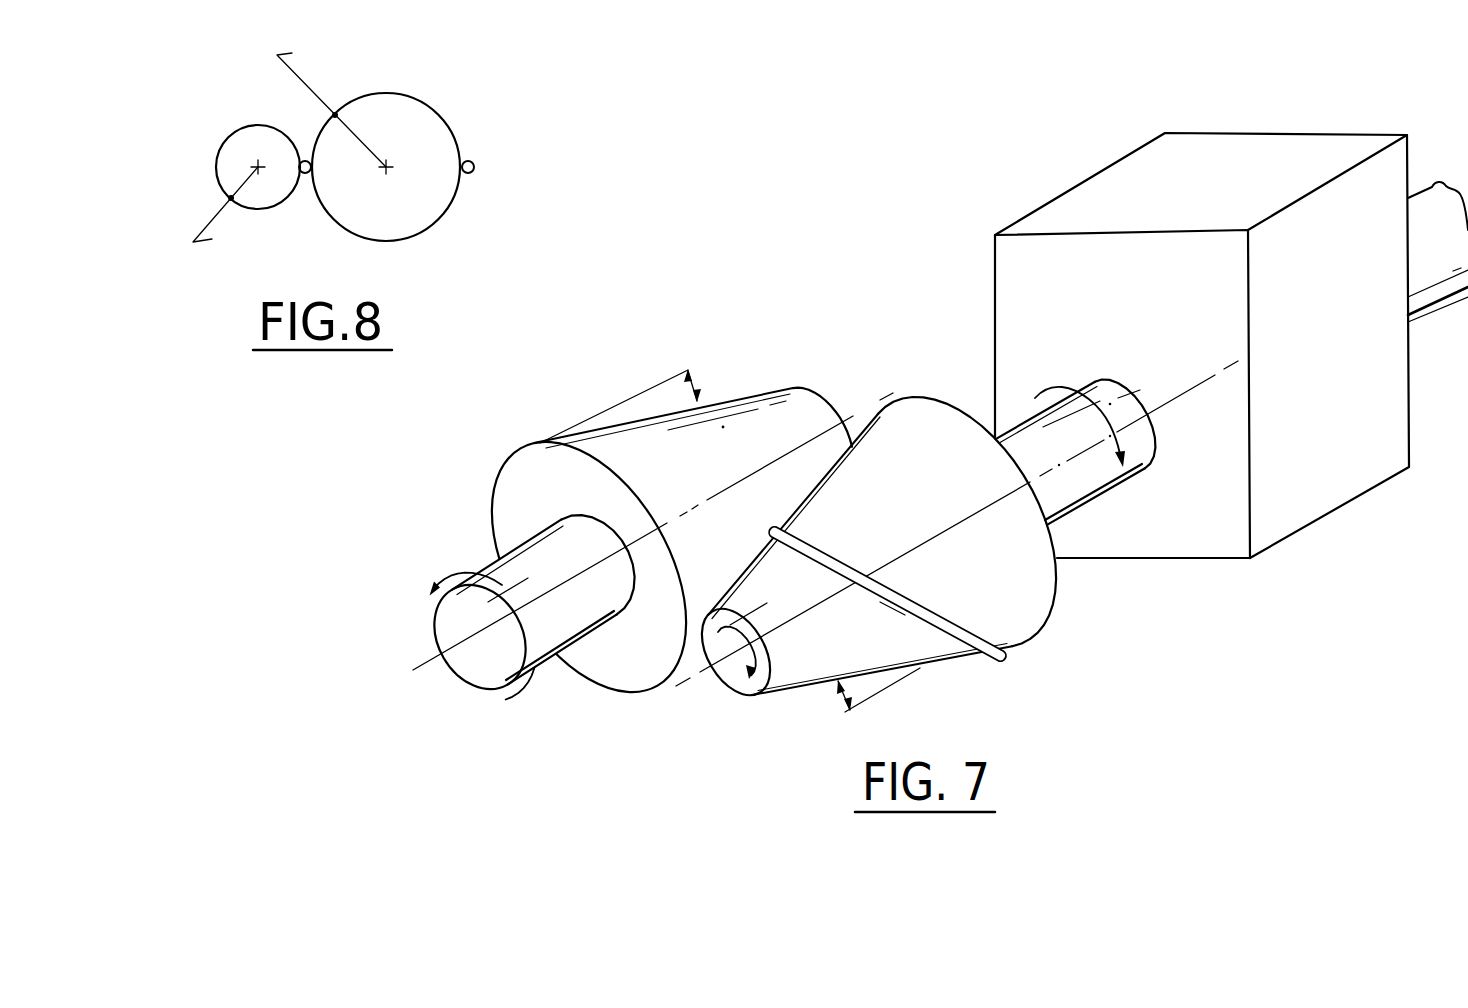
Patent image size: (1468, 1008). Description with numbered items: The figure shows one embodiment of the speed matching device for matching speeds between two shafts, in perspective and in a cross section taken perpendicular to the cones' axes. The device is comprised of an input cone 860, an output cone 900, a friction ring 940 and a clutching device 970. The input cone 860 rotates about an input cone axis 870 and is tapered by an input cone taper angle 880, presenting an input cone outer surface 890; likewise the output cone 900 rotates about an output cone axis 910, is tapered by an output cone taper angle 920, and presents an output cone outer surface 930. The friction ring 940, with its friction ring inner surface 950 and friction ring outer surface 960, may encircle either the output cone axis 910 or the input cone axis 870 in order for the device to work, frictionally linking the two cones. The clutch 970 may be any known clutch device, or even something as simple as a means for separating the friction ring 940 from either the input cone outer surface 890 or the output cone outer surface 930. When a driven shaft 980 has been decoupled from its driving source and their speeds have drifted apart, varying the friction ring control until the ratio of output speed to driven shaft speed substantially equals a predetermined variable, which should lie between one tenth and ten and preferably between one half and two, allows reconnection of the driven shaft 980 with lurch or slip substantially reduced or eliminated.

In FIG. 8, the input cone 860 is at (225, 147).
In FIG. 7, the input cone 860 is at (592, 685).
In FIG. 8, the input cone axis 870 is at (261, 170).
In FIG. 7, the input cone axis 870 is at (862, 405).
In FIG. 7, the input cone taper angle 880 is at (697, 386).
In FIG. 7, the input cone outer surface 890 is at (760, 410).
In FIG. 8, the output cone 900 is at (403, 93).
In FIG. 7, the output cone 900 is at (1057, 608).
In FIG. 8, the output cone axis 910 is at (392, 172).
In FIG. 7, the output cone axis 910 is at (1173, 393).
In FIG. 7, the output cone taper angle 920 is at (840, 692).
In FIG. 7, the output cone outer surface 930 is at (1048, 547).
In FIG. 8, the friction ring 940 is at (477, 154).
In FIG. 7, the friction ring 940 is at (985, 657).
In FIG. 8, the friction ring inner surface 950 is at (463, 168).
In FIG. 8, the friction ring outer surface 960 is at (475, 168).
In FIG. 7, the clutch 970 is at (1238, 208).
In FIG. 7, the driven shaft 980 is at (1428, 210).